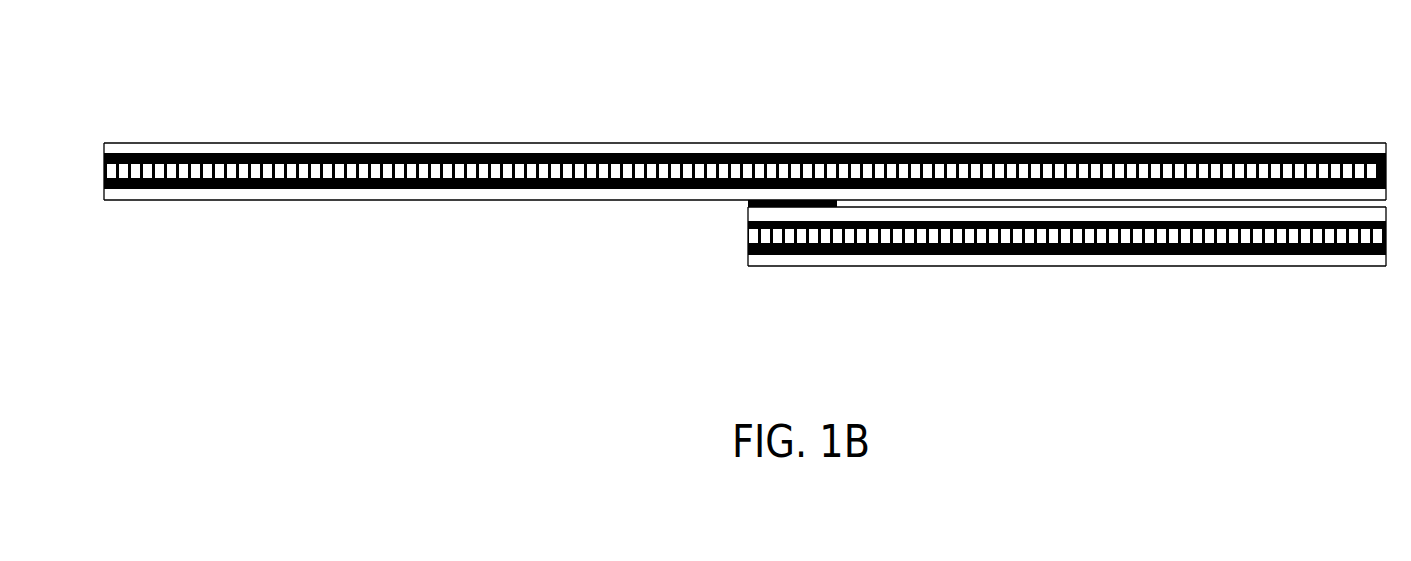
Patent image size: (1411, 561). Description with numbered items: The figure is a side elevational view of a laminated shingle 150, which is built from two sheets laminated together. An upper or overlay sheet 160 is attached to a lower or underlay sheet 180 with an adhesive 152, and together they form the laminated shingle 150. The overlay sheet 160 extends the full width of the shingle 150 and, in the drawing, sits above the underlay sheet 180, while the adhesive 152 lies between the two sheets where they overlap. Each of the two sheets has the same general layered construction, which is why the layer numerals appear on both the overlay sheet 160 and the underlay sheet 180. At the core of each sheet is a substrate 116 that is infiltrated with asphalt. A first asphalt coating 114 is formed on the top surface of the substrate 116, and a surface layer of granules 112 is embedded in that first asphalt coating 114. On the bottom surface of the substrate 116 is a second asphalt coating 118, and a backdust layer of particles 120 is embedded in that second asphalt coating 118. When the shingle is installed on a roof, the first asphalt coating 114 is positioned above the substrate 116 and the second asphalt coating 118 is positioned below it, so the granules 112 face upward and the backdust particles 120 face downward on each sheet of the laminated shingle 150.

The shingle 150 is at (297, 122).
The overlay sheet 160 is at (407, 207).
The underlay sheet 180 is at (1023, 283).
The adhesive 152 is at (747, 205).
The surface layer of granules 112 is at (492, 148).
The first asphalt coating 114 is at (562, 153).
The substrate 116 is at (648, 172).
The second asphalt coating 118 is at (522, 185).
The backdust layer of particles 120 is at (610, 192).